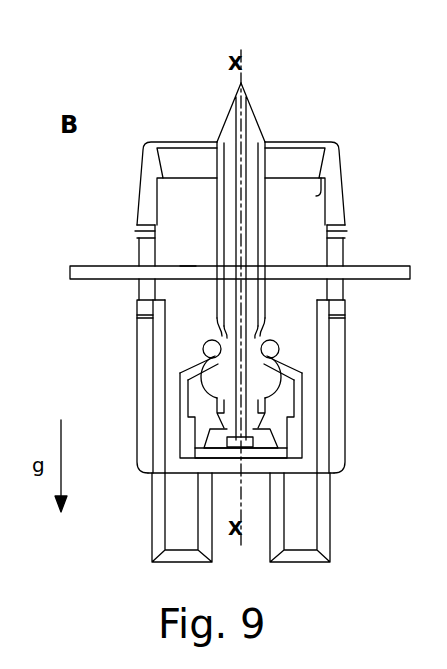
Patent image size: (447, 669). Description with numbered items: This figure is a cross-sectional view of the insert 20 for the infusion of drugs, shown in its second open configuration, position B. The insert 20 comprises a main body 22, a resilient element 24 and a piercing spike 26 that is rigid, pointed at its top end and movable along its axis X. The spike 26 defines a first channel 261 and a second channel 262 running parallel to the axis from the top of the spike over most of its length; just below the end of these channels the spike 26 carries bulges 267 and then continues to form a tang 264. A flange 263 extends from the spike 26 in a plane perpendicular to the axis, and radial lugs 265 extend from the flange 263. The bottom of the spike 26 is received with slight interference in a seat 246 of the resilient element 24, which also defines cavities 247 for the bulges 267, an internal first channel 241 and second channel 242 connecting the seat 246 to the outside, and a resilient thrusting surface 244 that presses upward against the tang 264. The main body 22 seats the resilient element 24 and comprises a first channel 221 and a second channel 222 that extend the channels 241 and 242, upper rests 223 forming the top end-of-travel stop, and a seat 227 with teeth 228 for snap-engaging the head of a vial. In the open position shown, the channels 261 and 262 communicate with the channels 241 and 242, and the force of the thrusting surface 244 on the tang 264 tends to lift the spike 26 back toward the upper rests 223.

The insert 20 is at (126, 40).
The main body 22 is at (137, 325).
The resilient element 24 is at (152, 350).
The piercing spike 26 is at (227, 148).
The first channel 221 is at (153, 522).
The second channel 222 is at (305, 513).
The upper rests 223 is at (343, 228).
The seat 227 is at (293, 188).
The teeth 228 is at (317, 197).
The first channel 241 is at (180, 378).
The second channel 242 is at (298, 382).
The resilient thrusting surface 244 is at (283, 470).
The seat 246 is at (220, 302).
The cavities 247 is at (275, 335).
The first channel 261 is at (230, 103).
The second channel 262 is at (250, 110).
The flange 263 is at (188, 272).
The tang 264 is at (255, 453).
The radial lugs 265 is at (95, 266).
The bulges 267 is at (278, 360).